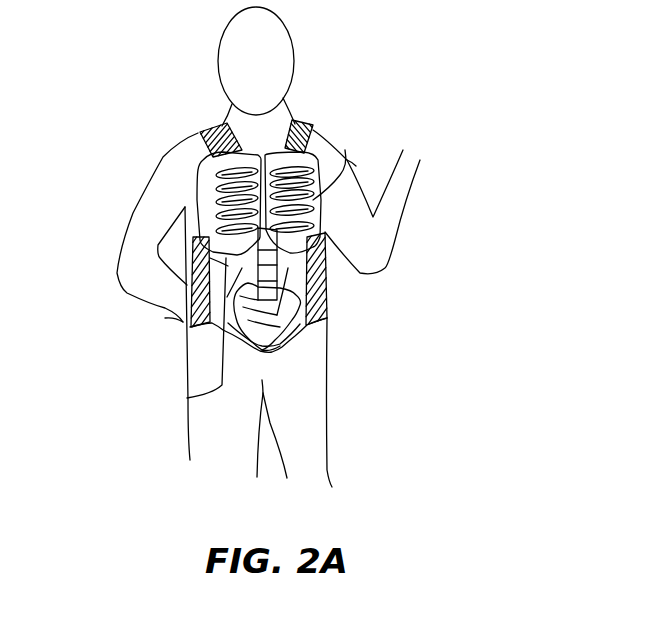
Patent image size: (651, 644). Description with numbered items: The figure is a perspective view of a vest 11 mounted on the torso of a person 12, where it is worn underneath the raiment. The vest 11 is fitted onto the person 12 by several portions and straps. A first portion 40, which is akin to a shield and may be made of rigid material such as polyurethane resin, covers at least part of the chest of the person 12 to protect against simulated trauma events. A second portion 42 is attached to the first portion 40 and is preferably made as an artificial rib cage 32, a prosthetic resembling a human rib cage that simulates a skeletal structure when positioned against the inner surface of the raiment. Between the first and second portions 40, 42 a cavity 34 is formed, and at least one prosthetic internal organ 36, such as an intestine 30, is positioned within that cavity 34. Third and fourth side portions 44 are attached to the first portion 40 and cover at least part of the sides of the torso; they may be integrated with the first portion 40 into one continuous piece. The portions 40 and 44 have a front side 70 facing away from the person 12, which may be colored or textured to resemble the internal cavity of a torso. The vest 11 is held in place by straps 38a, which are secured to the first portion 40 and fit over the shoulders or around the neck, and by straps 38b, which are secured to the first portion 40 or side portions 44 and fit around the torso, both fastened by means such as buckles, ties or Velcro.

The vest 11 is at (340, 250).
The person 12 is at (277, 42).
The intestine 30 is at (249, 231).
The artificial rib cage 32 is at (345, 150).
The cavity 34 is at (187, 397).
The prosthetic internal organ 36 is at (293, 328).
The straps 38a is at (213, 122).
The straps 38b is at (170, 318).
The first portion 40 is at (186, 291).
The second portion 42 is at (353, 158).
The side portions 44 is at (185, 293).
The front side 70 is at (288, 352).